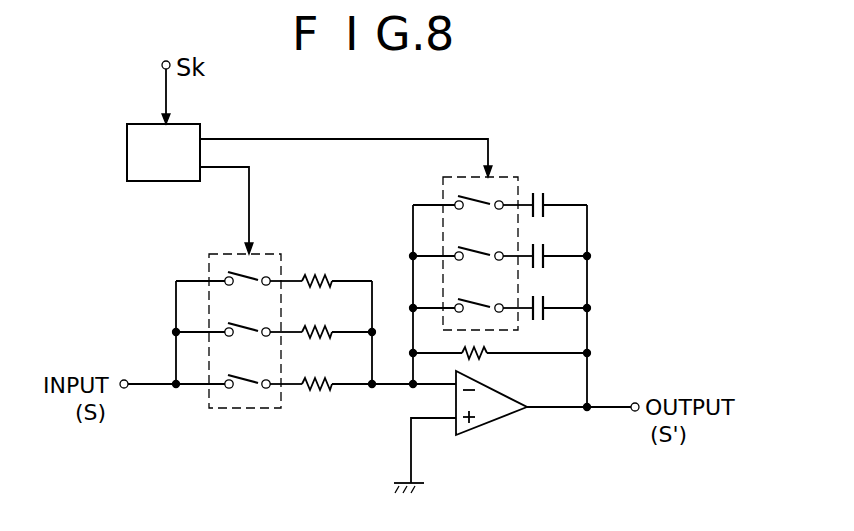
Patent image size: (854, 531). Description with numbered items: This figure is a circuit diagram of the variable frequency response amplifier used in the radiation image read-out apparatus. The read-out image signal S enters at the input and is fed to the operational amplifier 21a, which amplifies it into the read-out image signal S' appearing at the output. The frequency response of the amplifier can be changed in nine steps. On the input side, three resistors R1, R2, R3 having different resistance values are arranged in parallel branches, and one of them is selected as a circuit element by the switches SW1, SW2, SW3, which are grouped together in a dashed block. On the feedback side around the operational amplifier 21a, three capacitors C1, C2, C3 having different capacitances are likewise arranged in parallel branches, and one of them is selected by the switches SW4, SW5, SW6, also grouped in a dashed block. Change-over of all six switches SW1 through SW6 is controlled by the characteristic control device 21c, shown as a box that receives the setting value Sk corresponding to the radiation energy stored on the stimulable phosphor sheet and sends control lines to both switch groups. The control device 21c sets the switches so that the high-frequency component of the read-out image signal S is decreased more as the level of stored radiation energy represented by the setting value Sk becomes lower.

The characteristic control device 21c is at (186, 165).
The operational amplifier 21a is at (497, 422).
The switch SW1 is at (248, 275).
The switch SW2 is at (228, 318).
The switch SW3 is at (247, 388).
The switch SW4 is at (482, 202).
The switch SW5 is at (472, 241).
The switch SW6 is at (477, 297).
The resistor R1 is at (317, 274).
The resistor R2 is at (317, 330).
The resistor R3 is at (317, 383).
The capacitor C1 is at (543, 194).
The capacitor C2 is at (543, 248).
The capacitor C3 is at (543, 305).